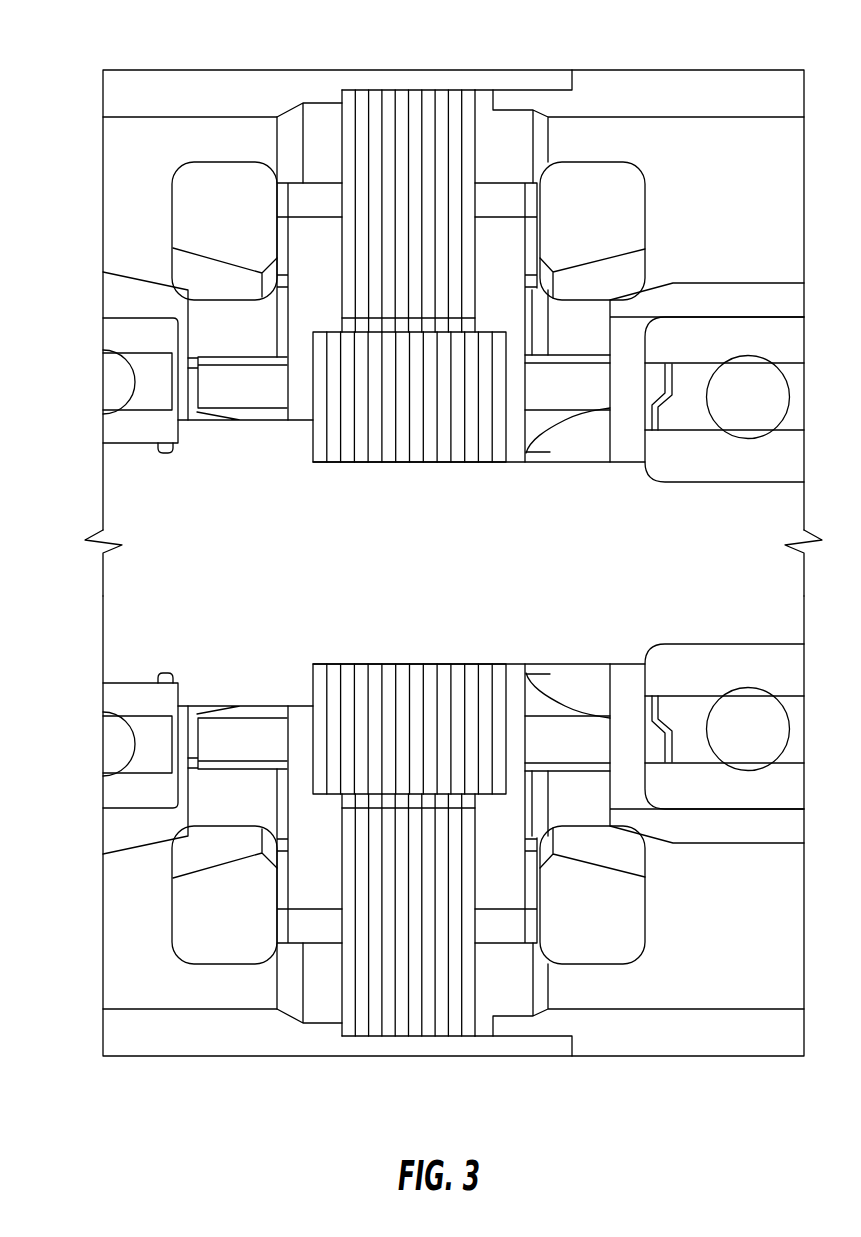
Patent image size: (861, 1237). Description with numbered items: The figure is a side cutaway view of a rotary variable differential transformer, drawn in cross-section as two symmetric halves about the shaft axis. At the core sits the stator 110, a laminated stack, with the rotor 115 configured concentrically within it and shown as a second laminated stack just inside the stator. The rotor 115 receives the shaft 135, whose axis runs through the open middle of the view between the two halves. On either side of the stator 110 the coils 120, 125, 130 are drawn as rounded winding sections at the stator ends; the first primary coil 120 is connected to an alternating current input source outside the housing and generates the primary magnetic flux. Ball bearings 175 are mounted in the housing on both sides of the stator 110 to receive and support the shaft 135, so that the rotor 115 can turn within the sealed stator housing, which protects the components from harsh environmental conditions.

The stator 110 is at (498, 245).
The rotor 115 is at (453, 430).
The first primary coil 120 is at (245, 203).
The coil 125 is at (397, 974).
The coil 130 is at (230, 942).
The shaft 135 is at (193, 578).
The ball bearings 175 is at (112, 738).